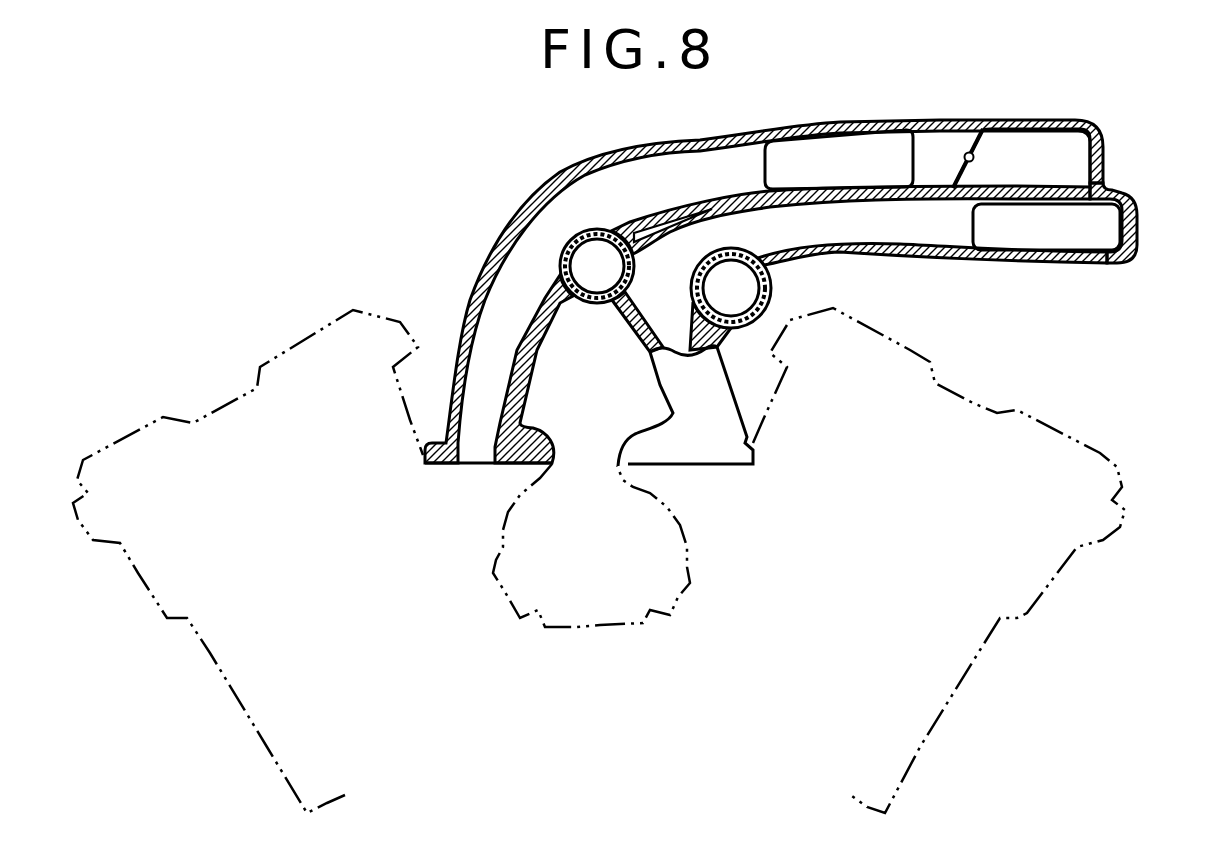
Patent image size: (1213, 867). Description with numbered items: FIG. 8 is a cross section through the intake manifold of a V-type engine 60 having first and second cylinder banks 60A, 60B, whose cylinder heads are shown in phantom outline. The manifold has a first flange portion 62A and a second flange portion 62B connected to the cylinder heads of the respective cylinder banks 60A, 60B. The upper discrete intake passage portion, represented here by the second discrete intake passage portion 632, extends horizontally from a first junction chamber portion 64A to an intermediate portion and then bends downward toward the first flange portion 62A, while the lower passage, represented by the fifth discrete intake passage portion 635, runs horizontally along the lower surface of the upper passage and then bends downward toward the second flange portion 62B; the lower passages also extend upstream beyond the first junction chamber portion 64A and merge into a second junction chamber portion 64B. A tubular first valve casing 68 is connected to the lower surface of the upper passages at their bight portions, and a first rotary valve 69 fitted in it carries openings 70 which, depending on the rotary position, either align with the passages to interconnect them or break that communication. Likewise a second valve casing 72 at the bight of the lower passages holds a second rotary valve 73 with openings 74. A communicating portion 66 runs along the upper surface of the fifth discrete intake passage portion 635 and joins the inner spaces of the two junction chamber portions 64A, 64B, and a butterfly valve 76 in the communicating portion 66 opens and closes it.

The engine 60 is at (599, 534).
The first cylinder bank 60A is at (310, 334).
The second cylinder bank 60B is at (915, 341).
The first flange portion 62A is at (549, 438).
The second flange portion 62B is at (640, 456).
The second discrete intake passage portion 632 is at (540, 200).
The fifth discrete intake passage portion 635 is at (840, 253).
The first junction chamber portion 64A is at (810, 150).
The second junction chamber portion 64B is at (1103, 237).
The communicating portion 66 is at (1030, 150).
The first valve casing 68 is at (597, 304).
The first rotary valve 69 is at (604, 226).
The openings 70 is at (567, 248).
The second valve casing 72 is at (776, 310).
The second rotary valve 73 is at (745, 247).
The openings 74 is at (690, 263).
The butterfly valve 76 is at (969, 152).